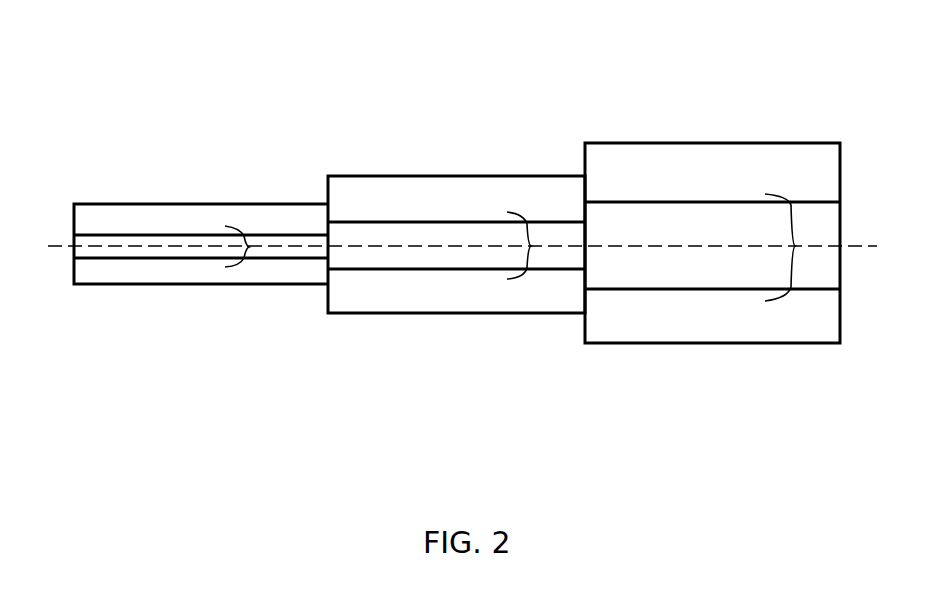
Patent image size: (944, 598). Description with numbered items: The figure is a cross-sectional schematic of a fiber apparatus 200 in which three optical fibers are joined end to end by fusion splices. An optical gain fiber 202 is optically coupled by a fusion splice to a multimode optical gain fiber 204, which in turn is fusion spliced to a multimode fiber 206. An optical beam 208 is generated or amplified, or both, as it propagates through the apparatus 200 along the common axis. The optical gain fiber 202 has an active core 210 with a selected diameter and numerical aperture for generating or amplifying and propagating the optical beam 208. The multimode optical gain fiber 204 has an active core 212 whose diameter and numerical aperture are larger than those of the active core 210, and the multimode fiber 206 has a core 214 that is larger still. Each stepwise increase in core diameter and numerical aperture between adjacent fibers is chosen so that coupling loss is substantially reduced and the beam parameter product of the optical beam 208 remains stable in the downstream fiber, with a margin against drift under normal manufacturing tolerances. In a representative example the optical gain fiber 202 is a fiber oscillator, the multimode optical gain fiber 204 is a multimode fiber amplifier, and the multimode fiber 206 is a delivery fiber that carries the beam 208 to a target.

The fiber apparatus 200 is at (195, 73).
The optical gain fiber 202 is at (137, 213).
The multimode optical gain fiber 204 is at (451, 175).
The multimode fiber 206 is at (712, 142).
The optical beam 208 is at (248, 243).
The active core 210 is at (136, 251).
The active core 212 is at (387, 257).
The core 214 is at (681, 273).